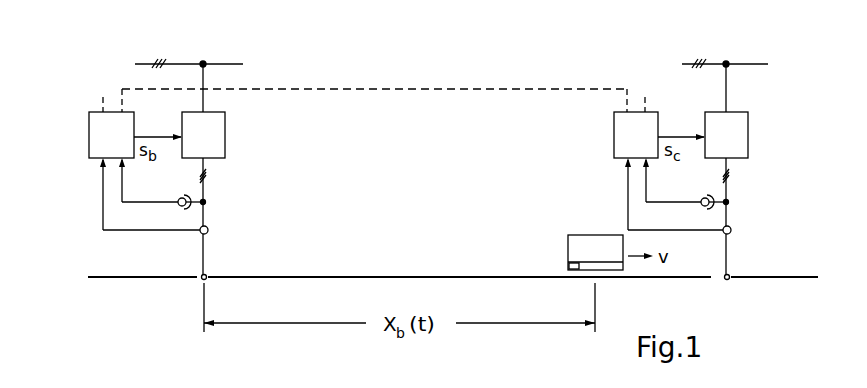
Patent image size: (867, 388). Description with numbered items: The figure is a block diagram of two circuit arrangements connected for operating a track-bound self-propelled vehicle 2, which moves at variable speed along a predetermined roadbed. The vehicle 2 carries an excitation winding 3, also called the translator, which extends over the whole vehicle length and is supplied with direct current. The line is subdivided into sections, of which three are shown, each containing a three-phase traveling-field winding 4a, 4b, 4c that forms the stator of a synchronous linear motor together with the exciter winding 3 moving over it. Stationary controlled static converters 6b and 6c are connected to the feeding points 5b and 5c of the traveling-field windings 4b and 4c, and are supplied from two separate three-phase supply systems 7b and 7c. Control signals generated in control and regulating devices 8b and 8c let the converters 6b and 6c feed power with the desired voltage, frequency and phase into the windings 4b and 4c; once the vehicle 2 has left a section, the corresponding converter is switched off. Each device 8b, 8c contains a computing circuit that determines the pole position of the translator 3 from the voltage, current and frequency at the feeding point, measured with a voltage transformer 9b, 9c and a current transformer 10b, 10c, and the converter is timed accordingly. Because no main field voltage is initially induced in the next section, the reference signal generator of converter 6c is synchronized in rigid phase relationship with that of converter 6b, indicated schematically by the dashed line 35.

The self-propelled vehicle 2 is at (587, 235).
The excitation winding 3 is at (568, 265).
The traveling-field winding 4a is at (157, 279).
The traveling-field winding 4b is at (502, 279).
The traveling-field winding 4c is at (770, 278).
The feeding point 5b is at (206, 274).
The feeding point 5c is at (729, 274).
The controlled static converter 6b is at (225, 132).
The controlled static converter 6c is at (748, 132).
The three-phase supply system 7b is at (187, 64).
The three-phase supply system 7c is at (738, 64).
The control and regulating device 8b is at (134, 118).
The control and regulating device 8c is at (614, 120).
The voltage transformer 9b is at (178, 200).
The voltage transformer 9c is at (701, 200).
The current transformer 10b is at (207, 227).
The current transformer 10c is at (730, 227).
The dashed line 35 is at (403, 88).